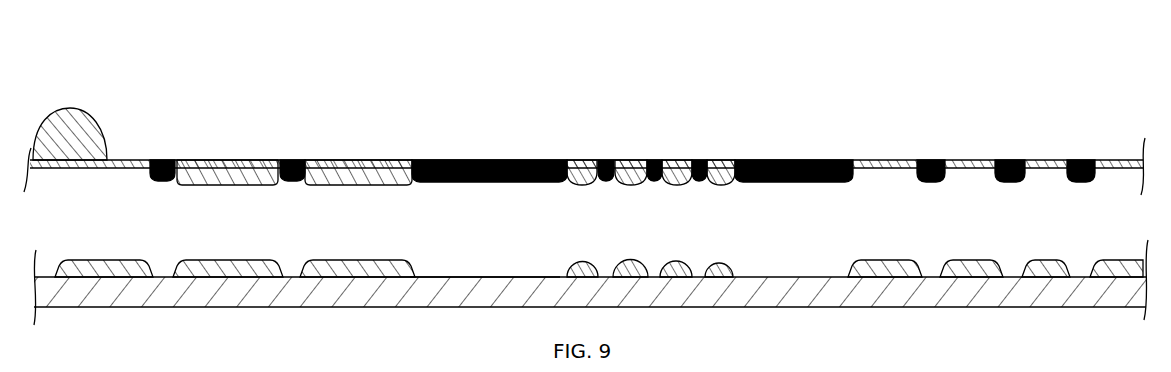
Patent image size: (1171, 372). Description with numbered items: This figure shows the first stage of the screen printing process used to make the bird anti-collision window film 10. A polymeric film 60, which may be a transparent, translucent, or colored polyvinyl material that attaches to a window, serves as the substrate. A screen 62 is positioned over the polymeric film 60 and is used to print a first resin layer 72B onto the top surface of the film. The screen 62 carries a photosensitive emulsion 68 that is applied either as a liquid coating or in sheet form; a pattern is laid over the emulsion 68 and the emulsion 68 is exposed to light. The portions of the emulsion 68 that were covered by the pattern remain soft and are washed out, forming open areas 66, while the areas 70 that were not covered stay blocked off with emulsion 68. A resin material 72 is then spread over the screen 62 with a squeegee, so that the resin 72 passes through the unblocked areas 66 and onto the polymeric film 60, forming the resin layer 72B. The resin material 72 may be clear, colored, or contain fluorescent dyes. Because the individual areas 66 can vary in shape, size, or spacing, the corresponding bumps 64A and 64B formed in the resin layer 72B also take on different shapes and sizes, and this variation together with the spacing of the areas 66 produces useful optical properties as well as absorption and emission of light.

The electronic device 10 is at (150, 58).
The polymeric film 60 is at (395, 308).
The screen 62 is at (53, 169).
The bump 64A is at (410, 262).
The bump 64B is at (584, 262).
The open areas 66 is at (127, 160).
The photosensitive emulsion 68 is at (494, 184).
The blocked areas 70 is at (163, 160).
The resin material 72 is at (71, 108).
The resin layer 72B is at (108, 260).